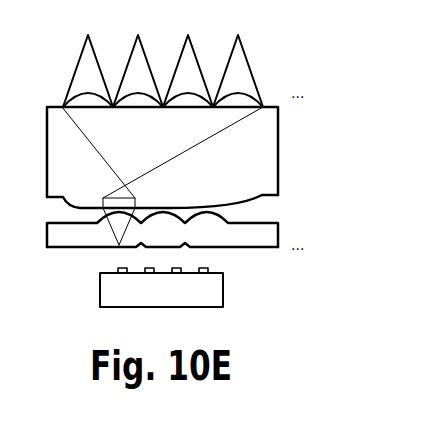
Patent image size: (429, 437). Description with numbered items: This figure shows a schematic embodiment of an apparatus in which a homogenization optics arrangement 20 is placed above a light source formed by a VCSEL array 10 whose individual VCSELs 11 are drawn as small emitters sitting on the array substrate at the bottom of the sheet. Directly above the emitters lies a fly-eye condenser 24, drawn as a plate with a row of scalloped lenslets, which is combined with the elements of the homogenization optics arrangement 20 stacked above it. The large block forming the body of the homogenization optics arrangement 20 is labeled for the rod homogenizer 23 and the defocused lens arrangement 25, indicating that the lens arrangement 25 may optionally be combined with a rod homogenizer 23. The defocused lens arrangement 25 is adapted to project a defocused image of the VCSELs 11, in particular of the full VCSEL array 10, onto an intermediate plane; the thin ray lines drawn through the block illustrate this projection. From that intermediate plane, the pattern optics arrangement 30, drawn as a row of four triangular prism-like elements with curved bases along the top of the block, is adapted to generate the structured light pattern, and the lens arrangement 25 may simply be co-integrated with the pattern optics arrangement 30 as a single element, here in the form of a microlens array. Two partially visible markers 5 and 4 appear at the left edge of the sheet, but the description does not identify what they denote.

The pattern optics arrangement 30 is at (43, 78).
The homogenization optics arrangement 20 is at (139, 177).
The rod homogenizer 23 is at (162, 176).
The defocused lens arrangement 25 is at (267, 177).
The fly-eye condenser 24 is at (152, 215).
The VCSEL array 10 is at (100, 285).
The VCSELs 11 is at (208, 268).
The partial numeral (cut off) 5 is at (3, 196).
The partial numeral (cut off) 4 is at (293, 207).